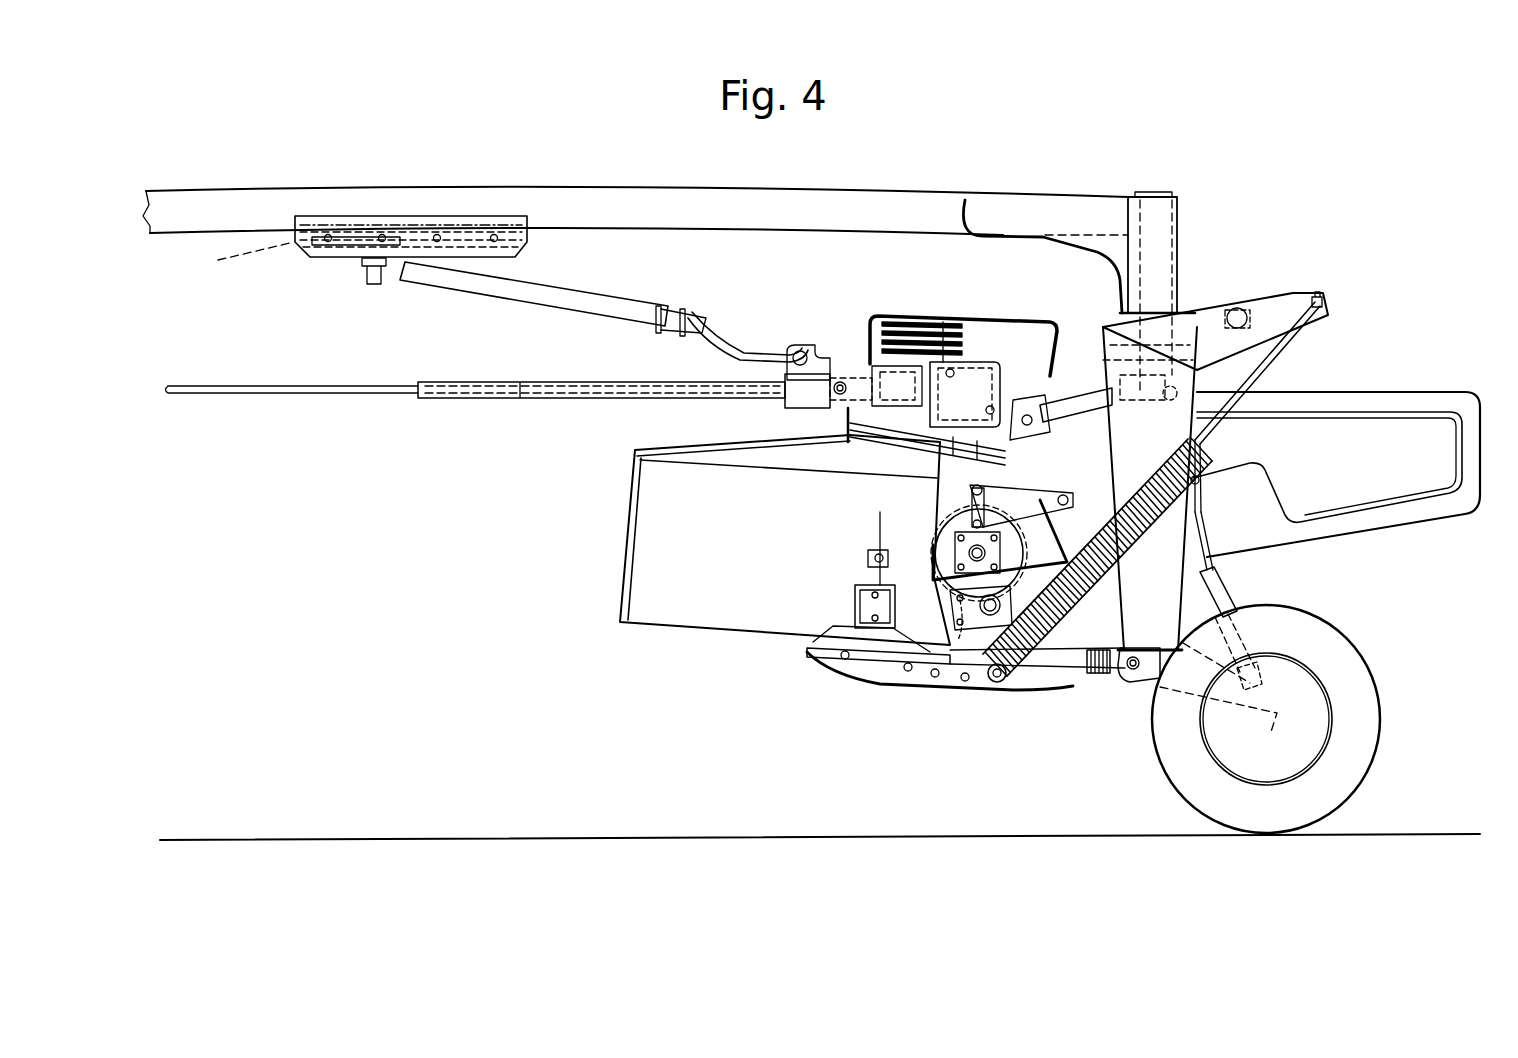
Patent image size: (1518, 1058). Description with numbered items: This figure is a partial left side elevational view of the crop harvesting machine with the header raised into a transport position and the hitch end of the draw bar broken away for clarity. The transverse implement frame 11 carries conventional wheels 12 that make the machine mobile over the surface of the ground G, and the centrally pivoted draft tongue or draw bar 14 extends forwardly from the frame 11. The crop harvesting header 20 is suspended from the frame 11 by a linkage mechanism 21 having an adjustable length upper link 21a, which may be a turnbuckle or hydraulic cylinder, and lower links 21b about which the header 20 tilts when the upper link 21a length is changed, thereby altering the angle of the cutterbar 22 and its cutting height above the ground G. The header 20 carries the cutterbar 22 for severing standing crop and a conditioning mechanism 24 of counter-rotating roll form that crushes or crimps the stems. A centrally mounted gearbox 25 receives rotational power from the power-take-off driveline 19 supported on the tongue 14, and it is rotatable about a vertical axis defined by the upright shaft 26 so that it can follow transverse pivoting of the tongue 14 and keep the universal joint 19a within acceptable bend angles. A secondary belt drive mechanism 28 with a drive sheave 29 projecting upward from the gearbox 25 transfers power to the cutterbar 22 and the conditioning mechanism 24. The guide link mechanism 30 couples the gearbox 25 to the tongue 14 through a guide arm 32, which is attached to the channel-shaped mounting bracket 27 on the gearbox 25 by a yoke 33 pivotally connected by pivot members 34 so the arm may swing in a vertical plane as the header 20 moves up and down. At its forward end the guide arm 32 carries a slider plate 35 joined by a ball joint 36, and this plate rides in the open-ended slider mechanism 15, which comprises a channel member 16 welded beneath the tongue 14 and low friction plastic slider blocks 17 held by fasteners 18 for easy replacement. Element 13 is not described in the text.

The transverse implement frame 11 is at (1180, 591).
The wheels 12 is at (1343, 652).
The frame column 13 is at (1152, 193).
The draw bar 14 is at (885, 195).
The slider mechanism 15 is at (346, 180).
The channel member 16 is at (530, 238).
The slider blocks 17 is at (237, 257).
The fasteners 18 is at (490, 242).
The power-take-off driveline 19 is at (362, 396).
The universal joint 19a is at (823, 413).
The crop harvesting header 20 is at (972, 272).
The linkage mechanism 21 is at (1015, 727).
The upper link 21a is at (1080, 420).
The lower links 21b is at (1087, 680).
The cutterbar 22 is at (808, 648).
The conditioning mechanism 24 is at (963, 603).
The gearbox 25 is at (870, 350).
The upright shaft 26 is at (975, 372).
The mounting bracket 27 is at (787, 403).
The secondary belt drive mechanism 28 is at (1012, 347).
The drive sheave 29 is at (965, 345).
The guide link mechanism 30 is at (712, 294).
The guide arm 32 is at (553, 300).
The yoke 33 is at (710, 352).
The pivot members 34 is at (797, 351).
The slider plate 35 is at (358, 248).
The ball joint 36 is at (367, 280).
The ground G is at (1383, 832).